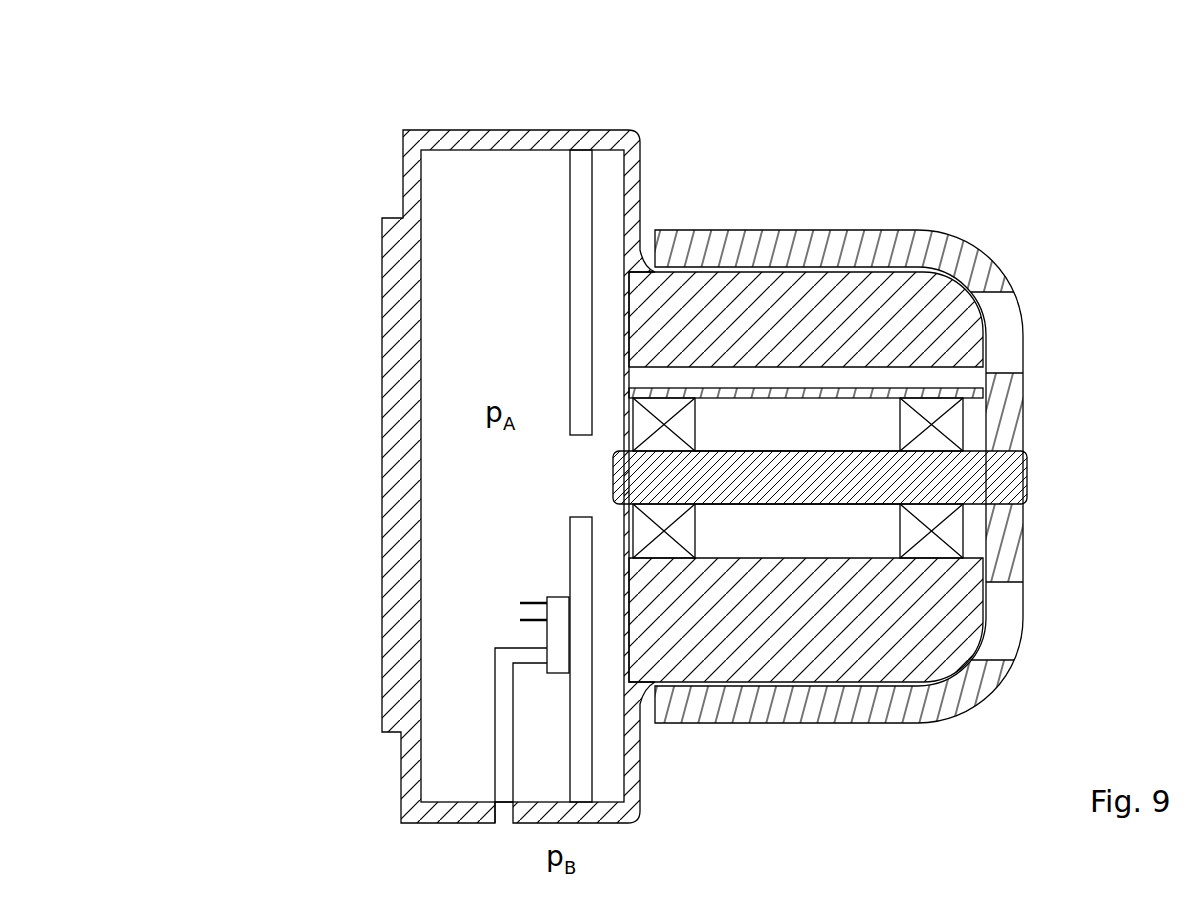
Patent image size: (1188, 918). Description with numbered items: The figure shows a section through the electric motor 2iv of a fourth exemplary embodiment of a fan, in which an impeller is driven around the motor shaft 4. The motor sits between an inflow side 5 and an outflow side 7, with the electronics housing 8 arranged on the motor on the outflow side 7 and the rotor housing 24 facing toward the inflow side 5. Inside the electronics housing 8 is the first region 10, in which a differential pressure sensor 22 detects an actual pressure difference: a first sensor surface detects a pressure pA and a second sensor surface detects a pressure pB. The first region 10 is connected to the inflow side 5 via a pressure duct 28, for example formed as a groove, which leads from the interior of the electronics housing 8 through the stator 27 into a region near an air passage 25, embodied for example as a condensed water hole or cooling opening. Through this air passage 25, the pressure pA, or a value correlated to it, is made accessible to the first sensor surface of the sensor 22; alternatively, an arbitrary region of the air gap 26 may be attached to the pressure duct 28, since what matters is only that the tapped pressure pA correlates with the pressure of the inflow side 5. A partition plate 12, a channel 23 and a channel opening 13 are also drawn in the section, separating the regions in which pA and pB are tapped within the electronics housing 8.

The electric motor 2iv is at (196, 74).
The motor shaft 4 is at (1017, 496).
The inflow side 5 is at (1166, 500).
The outflow side 7 is at (214, 500).
The electronics housing 8 is at (445, 137).
The first region 10 is at (467, 340).
The partition plate 12 is at (580, 180).
The channel opening 13 is at (495, 858).
The differential pressure sensor 22 is at (561, 607).
The channel 23 is at (507, 687).
The rotor housing 24 is at (913, 240).
The air passage 25 is at (1005, 323).
The air gap 26 is at (855, 688).
The stator 27 is at (770, 625).
The pressure duct 28 is at (860, 378).